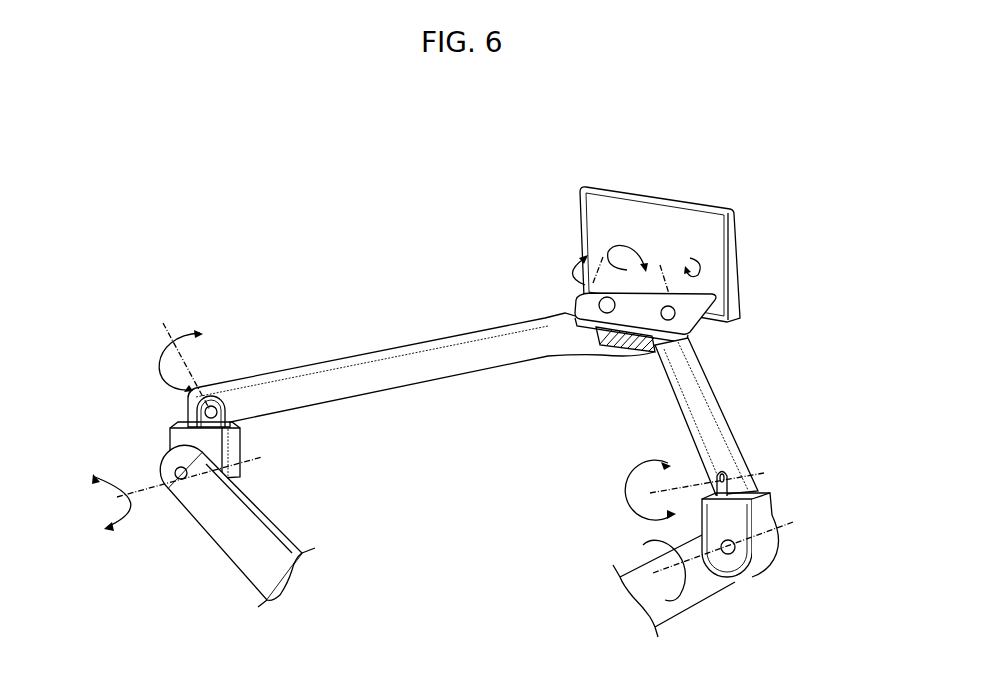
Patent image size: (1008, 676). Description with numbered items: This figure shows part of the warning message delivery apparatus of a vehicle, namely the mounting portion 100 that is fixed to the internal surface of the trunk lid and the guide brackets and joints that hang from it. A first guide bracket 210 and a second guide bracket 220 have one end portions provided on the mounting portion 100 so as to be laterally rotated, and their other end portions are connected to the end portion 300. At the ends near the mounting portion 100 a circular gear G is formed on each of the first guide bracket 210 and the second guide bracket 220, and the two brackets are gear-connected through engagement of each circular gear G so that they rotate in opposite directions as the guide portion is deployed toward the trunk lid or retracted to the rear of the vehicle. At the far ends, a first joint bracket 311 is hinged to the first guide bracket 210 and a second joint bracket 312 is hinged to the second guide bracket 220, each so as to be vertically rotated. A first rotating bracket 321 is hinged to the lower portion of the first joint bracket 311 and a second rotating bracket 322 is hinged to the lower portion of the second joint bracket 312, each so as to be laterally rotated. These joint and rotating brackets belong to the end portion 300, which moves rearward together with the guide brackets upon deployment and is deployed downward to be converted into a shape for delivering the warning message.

The mounting portion 100 is at (743, 203).
The first guide bracket 210 is at (405, 362).
The second guide bracket 220 is at (703, 397).
The first joint bracket 311 is at (237, 427).
The second joint bracket 312 is at (740, 472).
The first rotating bracket 321 is at (170, 442).
The second rotating bracket 322 is at (737, 563).
The end portion 300 is at (206, 592).
The circular gear G is at (630, 340).